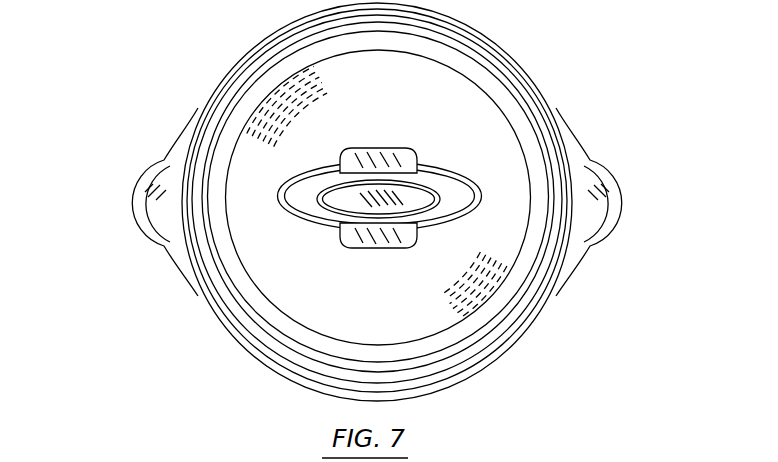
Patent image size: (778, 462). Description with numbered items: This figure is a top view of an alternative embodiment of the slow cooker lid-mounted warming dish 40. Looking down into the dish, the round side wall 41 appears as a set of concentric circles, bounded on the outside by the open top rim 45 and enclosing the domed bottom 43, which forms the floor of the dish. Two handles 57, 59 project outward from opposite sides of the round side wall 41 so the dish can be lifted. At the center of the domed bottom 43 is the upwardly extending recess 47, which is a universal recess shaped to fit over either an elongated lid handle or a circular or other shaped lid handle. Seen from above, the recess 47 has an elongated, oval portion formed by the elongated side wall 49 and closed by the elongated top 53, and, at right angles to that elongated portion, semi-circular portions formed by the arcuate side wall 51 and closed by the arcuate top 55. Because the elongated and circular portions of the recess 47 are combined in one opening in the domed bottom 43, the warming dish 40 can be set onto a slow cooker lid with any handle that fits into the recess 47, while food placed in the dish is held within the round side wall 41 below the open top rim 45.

The slow cooker lid-mounted warming dish 40 is at (600, 127).
The round side wall 41 is at (517, 88).
The domed bottom 43 is at (322, 314).
The open top rim 45 is at (542, 320).
The upwardly extending recess 47 is at (430, 109).
The elongated side wall 49 is at (452, 203).
The arcuate side wall 51 is at (402, 164).
The elongated top 53 is at (342, 200).
The arcuate top 55 is at (350, 233).
The handle 57 is at (168, 170).
The handle 59 is at (587, 172).